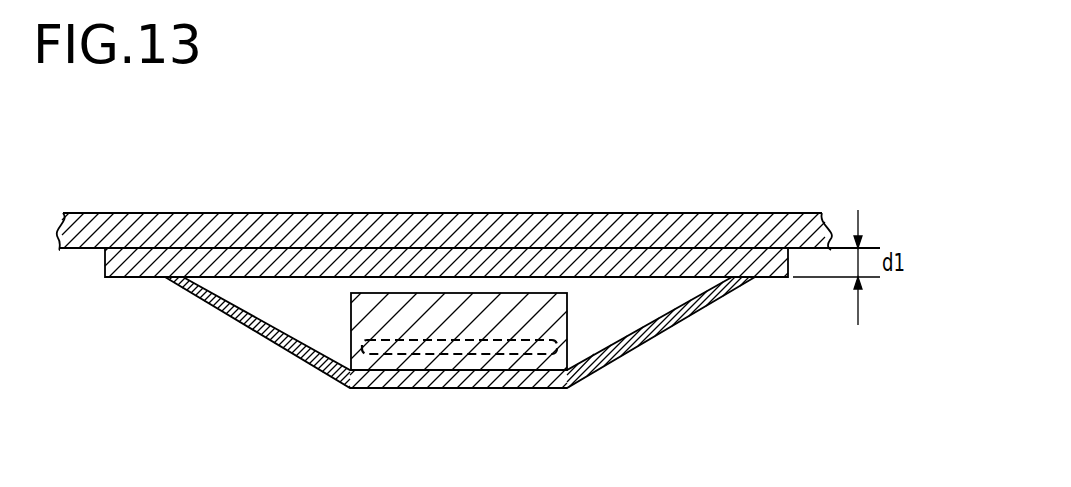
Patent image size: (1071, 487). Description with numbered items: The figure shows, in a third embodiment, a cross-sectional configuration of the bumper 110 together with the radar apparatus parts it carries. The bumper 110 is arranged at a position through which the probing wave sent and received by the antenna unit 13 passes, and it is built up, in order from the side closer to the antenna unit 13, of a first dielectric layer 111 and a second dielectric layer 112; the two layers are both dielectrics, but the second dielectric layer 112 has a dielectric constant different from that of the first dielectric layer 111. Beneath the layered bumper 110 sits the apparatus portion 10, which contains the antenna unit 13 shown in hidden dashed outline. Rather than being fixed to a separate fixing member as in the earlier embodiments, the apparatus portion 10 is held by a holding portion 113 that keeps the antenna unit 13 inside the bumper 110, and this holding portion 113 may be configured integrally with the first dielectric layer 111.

The bumper 110 is at (147, 146).
The first dielectric layer 111 is at (252, 260).
The second dielectric layer 112 is at (109, 210).
The holding portion 113 is at (288, 355).
The apparatus portion 10 is at (430, 367).
The antenna unit 13 is at (557, 345).